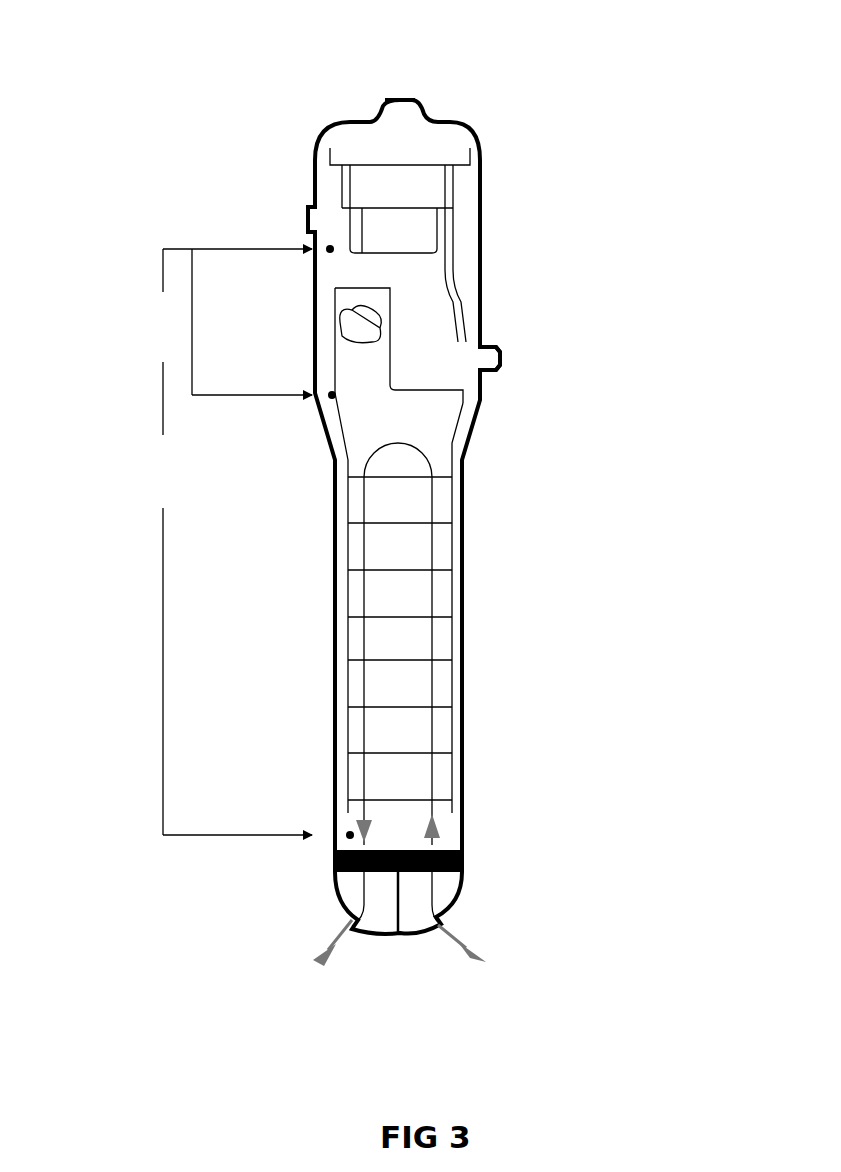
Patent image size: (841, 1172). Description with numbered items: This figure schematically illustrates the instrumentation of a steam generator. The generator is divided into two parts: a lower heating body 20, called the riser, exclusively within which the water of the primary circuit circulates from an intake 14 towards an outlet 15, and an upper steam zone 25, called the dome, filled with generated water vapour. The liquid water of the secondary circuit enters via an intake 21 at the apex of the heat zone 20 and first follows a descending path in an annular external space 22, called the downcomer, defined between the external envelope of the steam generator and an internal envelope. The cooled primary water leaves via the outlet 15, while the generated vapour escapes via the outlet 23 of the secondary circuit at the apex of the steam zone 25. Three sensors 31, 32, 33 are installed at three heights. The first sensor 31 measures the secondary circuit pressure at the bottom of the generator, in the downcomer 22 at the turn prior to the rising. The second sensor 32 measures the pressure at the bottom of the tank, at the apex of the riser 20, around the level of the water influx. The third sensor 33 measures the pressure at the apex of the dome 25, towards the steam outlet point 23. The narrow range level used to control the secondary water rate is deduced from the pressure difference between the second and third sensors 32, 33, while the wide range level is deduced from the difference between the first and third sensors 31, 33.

The intake 14 is at (491, 958).
The outlet 15 is at (310, 956).
The heating body 20 is at (618, 357).
The intake 21 is at (504, 352).
The annular external space 22 is at (332, 766).
The outlet 23 is at (442, 112).
The steam zone 25 is at (618, 132).
The first sensor 31 is at (342, 843).
The second sensor 32 is at (316, 392).
The third sensor 33 is at (328, 236).